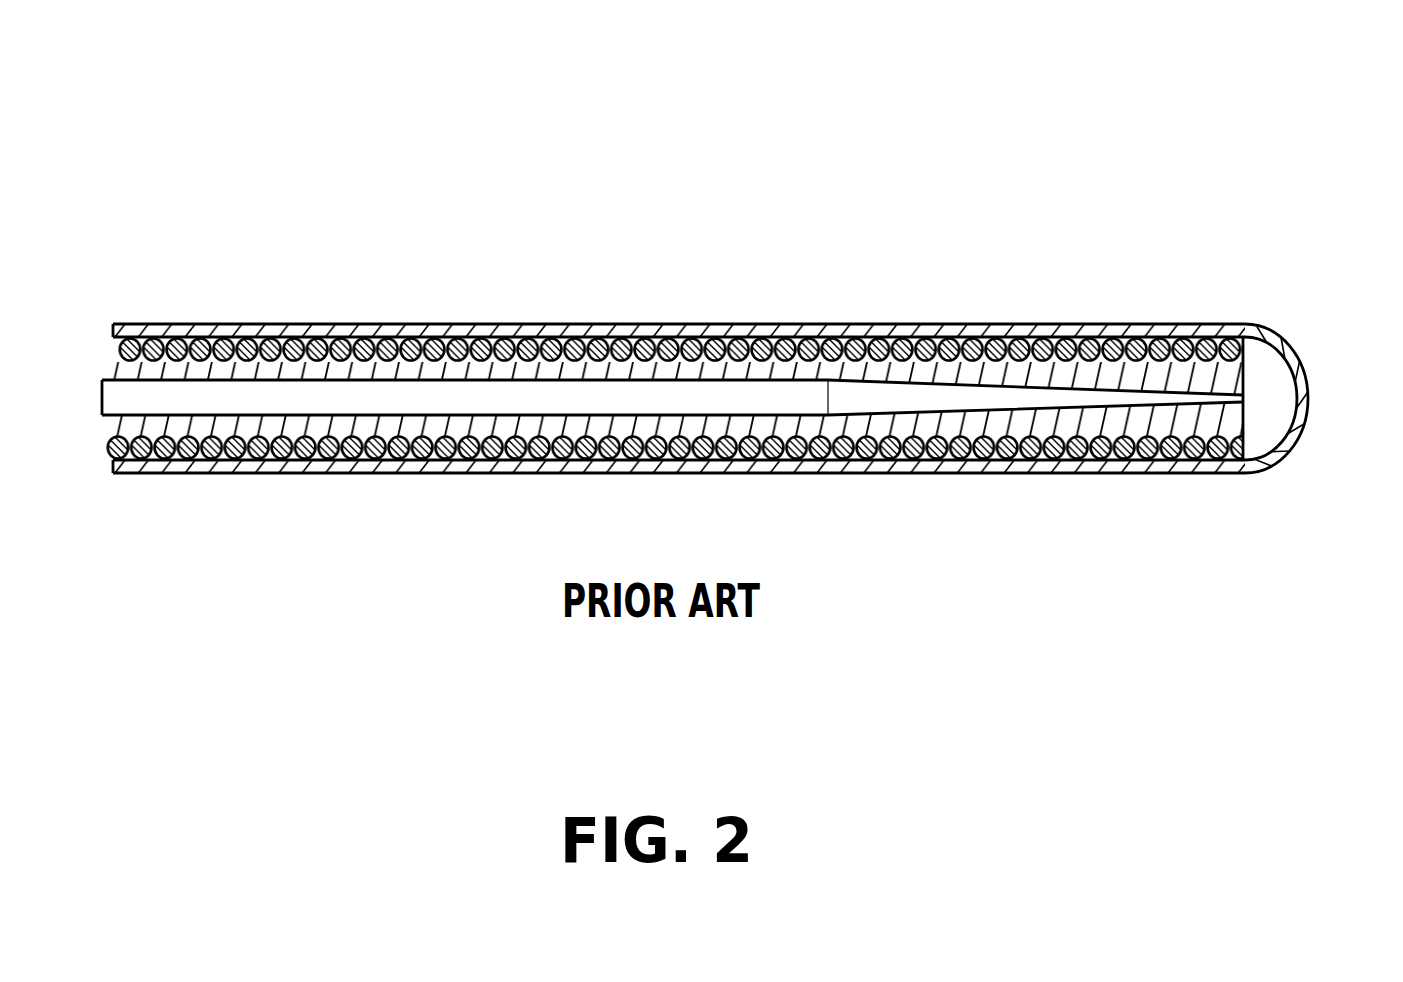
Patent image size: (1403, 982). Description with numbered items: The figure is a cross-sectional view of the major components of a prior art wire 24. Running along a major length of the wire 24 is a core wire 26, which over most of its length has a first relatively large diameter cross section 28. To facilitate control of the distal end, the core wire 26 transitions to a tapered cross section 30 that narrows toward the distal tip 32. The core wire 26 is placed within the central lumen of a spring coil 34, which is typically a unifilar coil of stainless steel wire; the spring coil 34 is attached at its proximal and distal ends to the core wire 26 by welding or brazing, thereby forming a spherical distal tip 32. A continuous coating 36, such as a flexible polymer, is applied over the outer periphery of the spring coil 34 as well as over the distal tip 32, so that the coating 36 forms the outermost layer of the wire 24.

The prior art wire 24 is at (960, 197).
The core wire 26 is at (672, 362).
The first relatively large diameter cross section 28 is at (465, 340).
The tapered cross section 30 is at (1035, 340).
The distal tip 32 is at (1316, 394).
The spring coil 34 is at (674, 362).
The continuous coating 36 is at (679, 369).